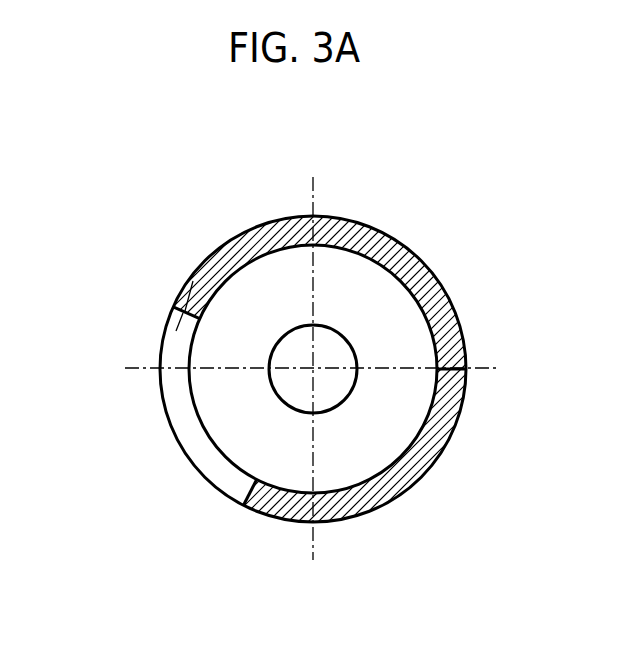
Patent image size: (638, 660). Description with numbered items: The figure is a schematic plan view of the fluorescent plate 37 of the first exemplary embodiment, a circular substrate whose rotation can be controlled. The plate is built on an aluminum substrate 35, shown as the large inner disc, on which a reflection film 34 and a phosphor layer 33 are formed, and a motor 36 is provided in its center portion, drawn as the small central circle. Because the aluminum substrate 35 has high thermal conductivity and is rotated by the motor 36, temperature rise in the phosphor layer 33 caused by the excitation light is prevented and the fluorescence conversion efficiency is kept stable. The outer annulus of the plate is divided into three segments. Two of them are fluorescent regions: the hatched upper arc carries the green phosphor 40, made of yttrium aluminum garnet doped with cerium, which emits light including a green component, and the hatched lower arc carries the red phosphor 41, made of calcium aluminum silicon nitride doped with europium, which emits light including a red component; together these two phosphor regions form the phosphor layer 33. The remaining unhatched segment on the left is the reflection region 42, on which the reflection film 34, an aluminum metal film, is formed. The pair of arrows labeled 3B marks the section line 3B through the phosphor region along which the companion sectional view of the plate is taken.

The fluorescent plate 37 is at (150, 207).
The phosphor layer 33 is at (319, 330).
The green phosphor 40 is at (415, 270).
The red phosphor 41 is at (393, 487).
The reflection film 34 is at (239, 369).
The reflection region 42 is at (177, 407).
The aluminum substrate 35 is at (238, 420).
The motor 36 is at (343, 385).
The section line 3B- 3B is at (193, 281).